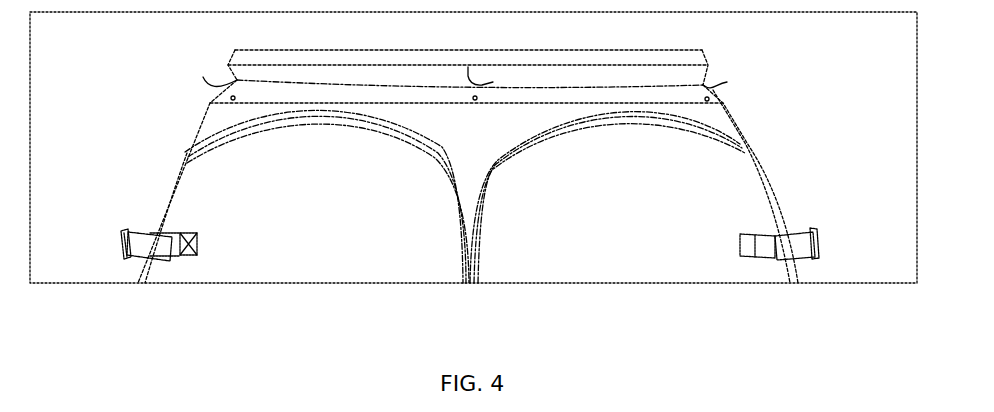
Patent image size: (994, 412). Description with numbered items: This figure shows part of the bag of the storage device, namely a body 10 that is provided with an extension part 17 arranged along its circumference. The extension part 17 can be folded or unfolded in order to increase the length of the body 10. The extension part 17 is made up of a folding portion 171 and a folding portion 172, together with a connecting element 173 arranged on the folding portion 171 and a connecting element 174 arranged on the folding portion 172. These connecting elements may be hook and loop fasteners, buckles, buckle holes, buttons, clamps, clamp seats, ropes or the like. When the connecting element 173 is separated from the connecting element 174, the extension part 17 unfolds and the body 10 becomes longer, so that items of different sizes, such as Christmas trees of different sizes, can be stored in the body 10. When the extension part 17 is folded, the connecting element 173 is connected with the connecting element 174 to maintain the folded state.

The body 10 is at (205, 125).
The extension part 17 is at (465, 201).
The folding portion 171 is at (597, 75).
The folding portion 172 is at (550, 95).
The connecting element 173 is at (723, 103).
The connecting element 174 is at (475, 100).